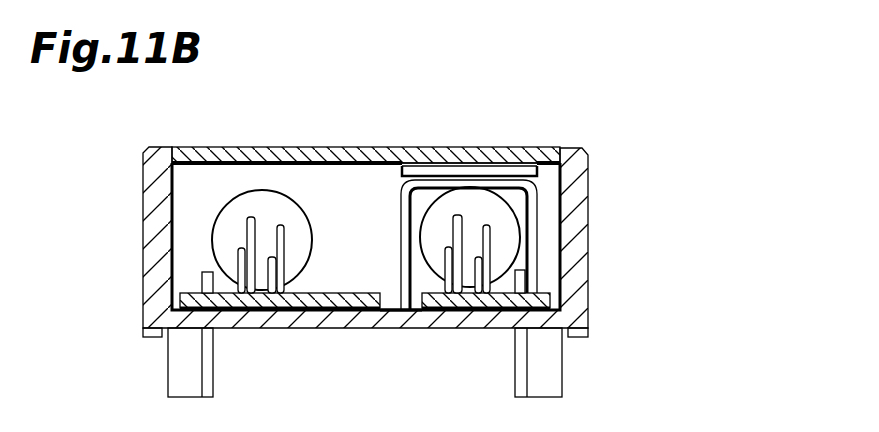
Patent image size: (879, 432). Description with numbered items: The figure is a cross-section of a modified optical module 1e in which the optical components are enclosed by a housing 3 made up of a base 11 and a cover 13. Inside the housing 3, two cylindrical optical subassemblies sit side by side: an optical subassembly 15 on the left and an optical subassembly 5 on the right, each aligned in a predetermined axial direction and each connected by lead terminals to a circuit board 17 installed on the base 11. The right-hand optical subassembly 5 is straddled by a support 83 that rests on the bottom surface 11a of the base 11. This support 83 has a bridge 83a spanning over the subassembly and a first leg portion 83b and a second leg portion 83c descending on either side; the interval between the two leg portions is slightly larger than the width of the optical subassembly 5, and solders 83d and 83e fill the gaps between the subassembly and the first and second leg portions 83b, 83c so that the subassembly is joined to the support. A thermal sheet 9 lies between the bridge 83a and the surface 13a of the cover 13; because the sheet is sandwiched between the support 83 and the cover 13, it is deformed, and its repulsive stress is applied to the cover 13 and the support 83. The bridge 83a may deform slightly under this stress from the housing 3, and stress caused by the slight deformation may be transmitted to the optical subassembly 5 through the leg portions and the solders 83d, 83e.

The optical module 1e is at (731, 103).
The housing 3 is at (668, 92).
The base 11 is at (577, 193).
The bottom surface 11a is at (408, 300).
The cover 13 is at (550, 152).
The surface of the cover 13a is at (337, 166).
The thermal sheet 9 is at (522, 170).
The support 83 is at (404, 255).
The bridge 83a is at (462, 180).
The first leg portion 83b is at (402, 228).
The second leg portion 83c is at (538, 223).
The solder 83d is at (402, 170).
The solder 83e is at (522, 230).
The circuit board 17 is at (362, 310).
The optical subassembly 15 is at (295, 257).
The optical subassembly 5 is at (502, 258).